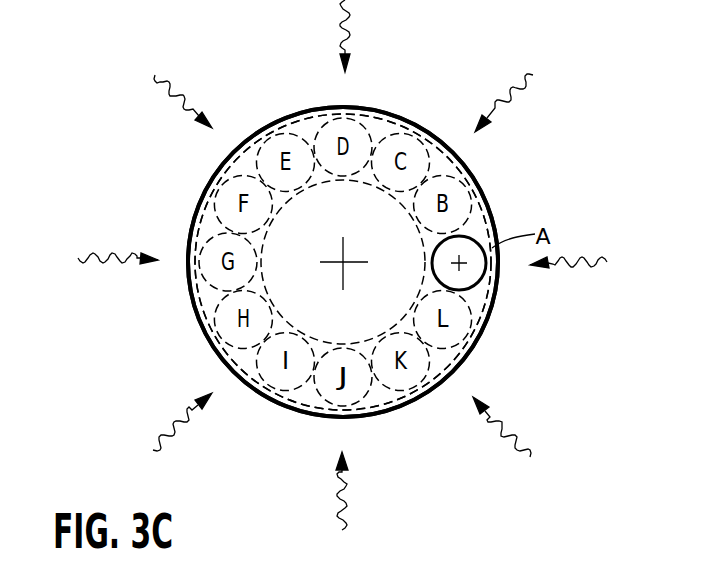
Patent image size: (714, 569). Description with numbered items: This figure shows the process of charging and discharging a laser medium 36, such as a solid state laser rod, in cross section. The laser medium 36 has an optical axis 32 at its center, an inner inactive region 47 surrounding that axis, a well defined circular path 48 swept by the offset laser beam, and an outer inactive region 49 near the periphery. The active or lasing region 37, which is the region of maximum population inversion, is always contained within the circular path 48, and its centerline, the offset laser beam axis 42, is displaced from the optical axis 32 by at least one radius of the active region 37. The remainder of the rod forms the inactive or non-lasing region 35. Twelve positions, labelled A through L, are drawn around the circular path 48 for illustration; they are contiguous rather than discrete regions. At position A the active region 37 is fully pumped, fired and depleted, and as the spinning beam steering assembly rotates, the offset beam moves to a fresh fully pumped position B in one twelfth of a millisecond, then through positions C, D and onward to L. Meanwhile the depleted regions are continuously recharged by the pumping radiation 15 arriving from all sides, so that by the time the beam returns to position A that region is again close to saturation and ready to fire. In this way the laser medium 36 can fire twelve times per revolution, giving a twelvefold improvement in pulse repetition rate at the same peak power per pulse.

The pumping radiation 15 is at (340, 20).
The optical axis 32 is at (348, 266).
The inactive or non-lasing region 35 is at (197, 218).
The laser medium 36 is at (470, 360).
The active or lasing region 37 is at (470, 292).
The offset laser beam axis 42 is at (463, 265).
The inner inactive region 47 is at (392, 218).
The circular path swept by the offset laser beam 48 is at (378, 142).
The outer inactive region 49 is at (490, 212).